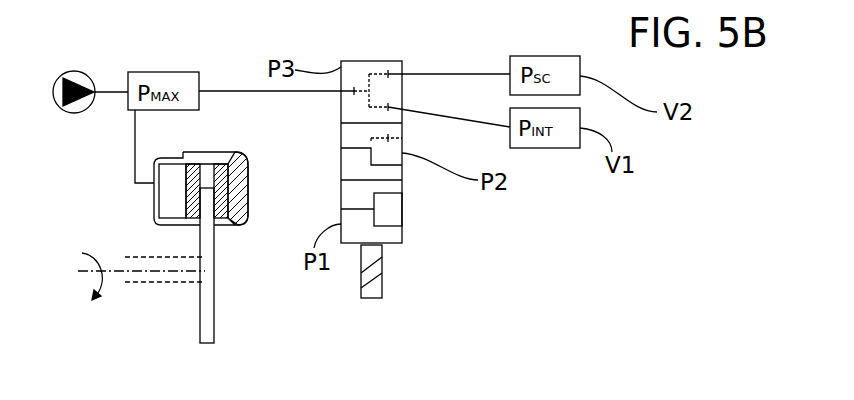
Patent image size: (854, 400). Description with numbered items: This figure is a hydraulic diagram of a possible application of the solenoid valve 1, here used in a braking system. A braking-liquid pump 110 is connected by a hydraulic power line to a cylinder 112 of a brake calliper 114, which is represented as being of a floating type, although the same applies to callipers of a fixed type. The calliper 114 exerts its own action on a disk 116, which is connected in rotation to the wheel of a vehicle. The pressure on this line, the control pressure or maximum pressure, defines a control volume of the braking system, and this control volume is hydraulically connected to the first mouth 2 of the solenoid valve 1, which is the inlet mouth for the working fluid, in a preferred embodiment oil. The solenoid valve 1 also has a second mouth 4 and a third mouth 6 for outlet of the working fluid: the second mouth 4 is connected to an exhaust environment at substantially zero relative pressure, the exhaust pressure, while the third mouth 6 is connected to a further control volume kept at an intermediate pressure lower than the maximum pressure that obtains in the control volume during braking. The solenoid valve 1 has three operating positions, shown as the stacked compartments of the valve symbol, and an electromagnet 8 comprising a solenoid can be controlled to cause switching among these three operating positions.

The solenoid valve 1 is at (332, 52).
The first mouth 2 is at (341, 92).
The second mouth 4 is at (402, 74).
The third mouth 6 is at (402, 107).
The electromagnet 8 is at (382, 283).
The braking-liquid pump 110 is at (75, 113).
The cylinder 112 is at (168, 177).
The brake calliper 114 is at (245, 163).
The disk 116 is at (213, 273).